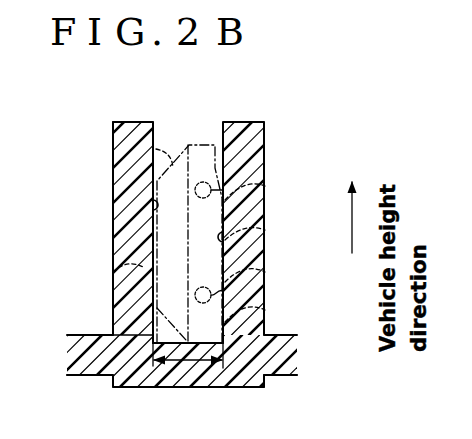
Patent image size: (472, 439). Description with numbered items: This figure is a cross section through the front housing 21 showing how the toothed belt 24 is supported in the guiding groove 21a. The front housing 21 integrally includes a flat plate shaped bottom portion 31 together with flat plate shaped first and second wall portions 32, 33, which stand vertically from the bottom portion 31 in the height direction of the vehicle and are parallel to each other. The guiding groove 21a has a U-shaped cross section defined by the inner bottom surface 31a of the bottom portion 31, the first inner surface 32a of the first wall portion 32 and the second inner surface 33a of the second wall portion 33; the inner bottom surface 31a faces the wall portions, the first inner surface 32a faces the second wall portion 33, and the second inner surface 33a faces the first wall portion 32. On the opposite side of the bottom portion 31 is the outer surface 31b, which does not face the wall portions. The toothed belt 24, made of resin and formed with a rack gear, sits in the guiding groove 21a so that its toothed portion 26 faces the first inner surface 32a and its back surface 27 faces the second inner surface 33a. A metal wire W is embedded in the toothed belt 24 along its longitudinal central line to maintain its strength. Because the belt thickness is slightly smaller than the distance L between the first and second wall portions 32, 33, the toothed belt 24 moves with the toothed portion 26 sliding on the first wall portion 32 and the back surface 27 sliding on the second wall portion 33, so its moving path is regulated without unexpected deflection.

The front housing 21 is at (293, 119).
The guiding groove 21a is at (224, 138).
The toothed belt 24 is at (153, 150).
The toothed portion 26 is at (115, 272).
The back surface 27 is at (264, 282).
The bottom portion 31 is at (214, 388).
The inner bottom surface 31a is at (150, 341).
The outer surface 31b is at (261, 387).
The first wall portion 32 is at (125, 233).
The first inner surface 32a is at (151, 205).
The second wall portion 33 is at (264, 208).
The second inner surface 33a is at (226, 236).
The metal wire W is at (264, 180).
The distance L is at (184, 366).